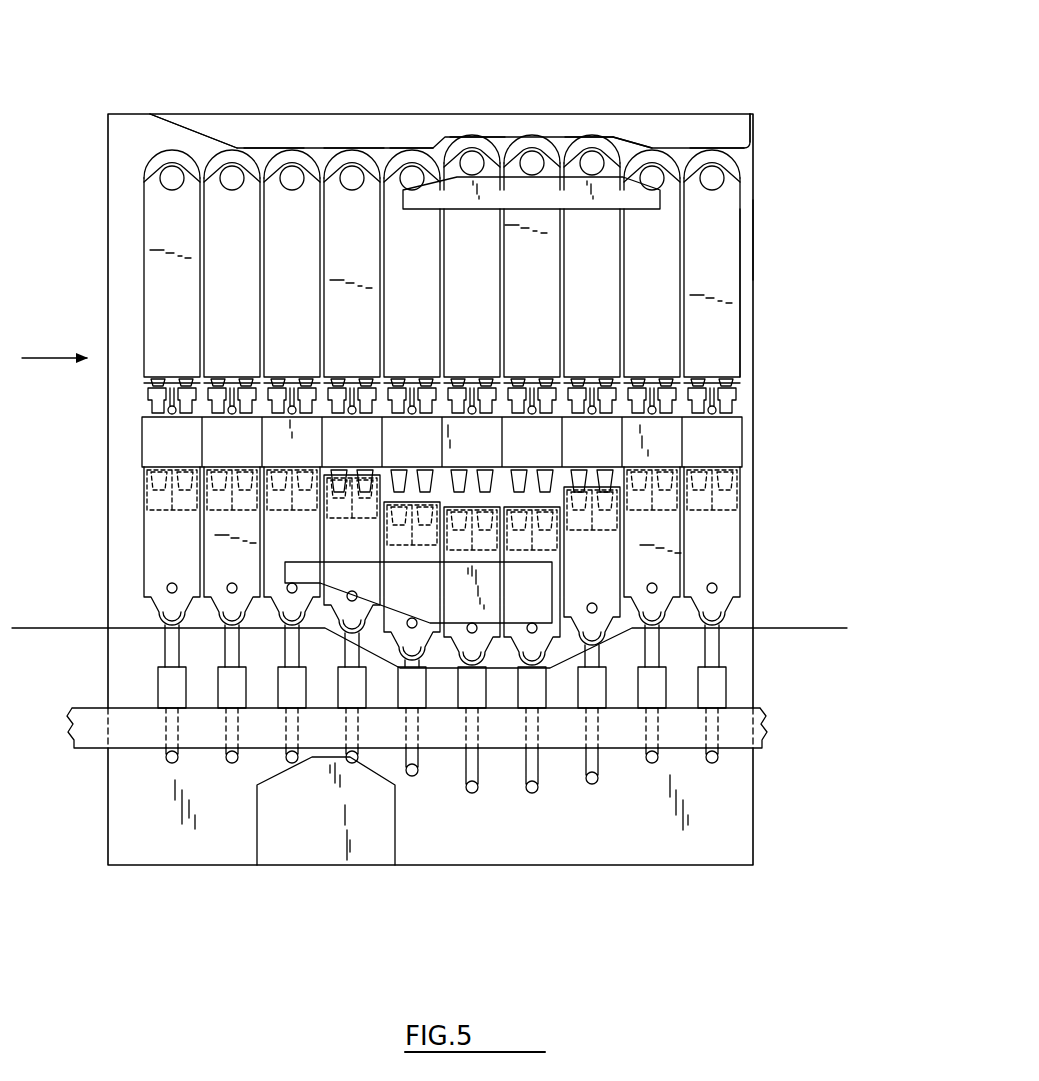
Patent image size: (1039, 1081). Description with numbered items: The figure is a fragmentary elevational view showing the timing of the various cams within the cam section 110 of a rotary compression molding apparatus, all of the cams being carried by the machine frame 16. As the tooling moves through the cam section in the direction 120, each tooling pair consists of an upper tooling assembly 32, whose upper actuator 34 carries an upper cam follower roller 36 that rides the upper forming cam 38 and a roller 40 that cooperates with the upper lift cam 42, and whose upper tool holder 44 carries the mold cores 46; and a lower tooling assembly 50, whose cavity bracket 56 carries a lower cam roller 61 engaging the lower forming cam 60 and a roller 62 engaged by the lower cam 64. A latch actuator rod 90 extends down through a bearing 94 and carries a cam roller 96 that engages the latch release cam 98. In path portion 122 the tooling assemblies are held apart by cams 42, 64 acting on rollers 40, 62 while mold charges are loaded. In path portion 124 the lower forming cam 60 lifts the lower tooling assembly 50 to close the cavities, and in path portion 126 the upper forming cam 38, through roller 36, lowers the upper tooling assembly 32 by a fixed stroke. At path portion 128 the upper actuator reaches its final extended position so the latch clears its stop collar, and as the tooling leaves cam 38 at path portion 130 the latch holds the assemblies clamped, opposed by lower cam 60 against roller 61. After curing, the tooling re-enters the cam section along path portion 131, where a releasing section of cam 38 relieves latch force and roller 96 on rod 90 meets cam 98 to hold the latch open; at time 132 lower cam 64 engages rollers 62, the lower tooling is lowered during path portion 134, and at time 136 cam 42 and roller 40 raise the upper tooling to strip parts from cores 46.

The machine frame 16 is at (694, 857).
The upper tooling assembly 32 is at (740, 290).
The upper actuator 34 is at (213, 245).
The upper cam follower roller 36 is at (152, 157).
The upper forming cam 38 is at (293, 125).
The roller 40 is at (233, 178).
The upper lift cam 42 is at (610, 183).
The upper tool holder 44 is at (152, 445).
The mold cores 46 is at (180, 405).
The lower tooling assembly 50 is at (740, 552).
The cavity bracket 56 is at (148, 522).
The lower forming cam 60 is at (50, 625).
The lower cam roller 61 is at (220, 618).
The roller 62 is at (230, 587).
The lower cam 64 is at (542, 587).
The latch actuator rod 90 is at (165, 728).
The bearing 94 is at (717, 683).
The cam roller 96 is at (177, 758).
The latch release cam 98 is at (322, 852).
The cam section 110 is at (752, 240).
The direction 120 is at (45, 357).
The path portion 122 is at (487, 100).
The path portion 124 is at (590, 110).
The path portion 126 is at (648, 102).
The path portion 128 is at (723, 108).
The path portion 130 is at (797, 118).
The path portion 131 is at (202, 110).
The time 132 is at (273, 100).
The path portion 134 is at (357, 100).
The time 136 is at (420, 100).